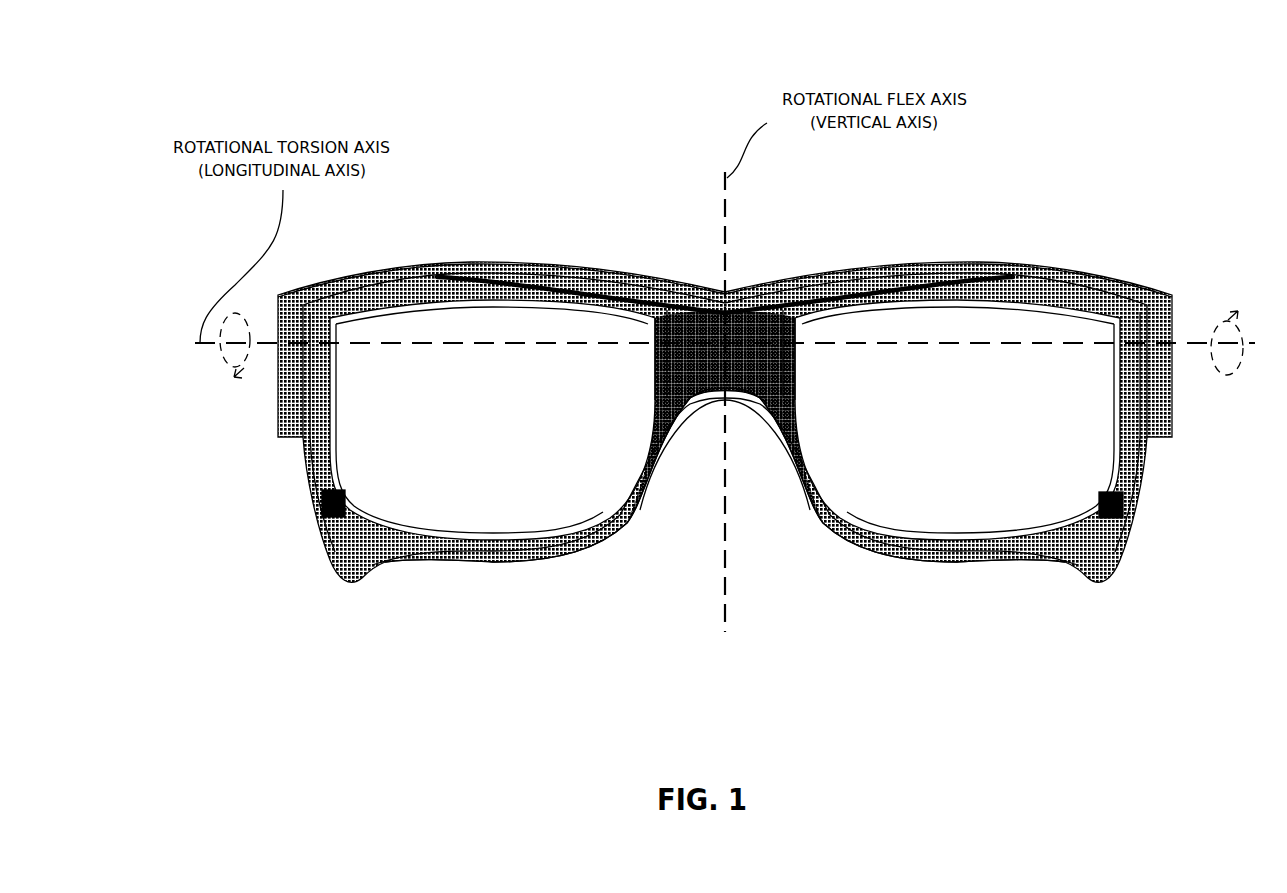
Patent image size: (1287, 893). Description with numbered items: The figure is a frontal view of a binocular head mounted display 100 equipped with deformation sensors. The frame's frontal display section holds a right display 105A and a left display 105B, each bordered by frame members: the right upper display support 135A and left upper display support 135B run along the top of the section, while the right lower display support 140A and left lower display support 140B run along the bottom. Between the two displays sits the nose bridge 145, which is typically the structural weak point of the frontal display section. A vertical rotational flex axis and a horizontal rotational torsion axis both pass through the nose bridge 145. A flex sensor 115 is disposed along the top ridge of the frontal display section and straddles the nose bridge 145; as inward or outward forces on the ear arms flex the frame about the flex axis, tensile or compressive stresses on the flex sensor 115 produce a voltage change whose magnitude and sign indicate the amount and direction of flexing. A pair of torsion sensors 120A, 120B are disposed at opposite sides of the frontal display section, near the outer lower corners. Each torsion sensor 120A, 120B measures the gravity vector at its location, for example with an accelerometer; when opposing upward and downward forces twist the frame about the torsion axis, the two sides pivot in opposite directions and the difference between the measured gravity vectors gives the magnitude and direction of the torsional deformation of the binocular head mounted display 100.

The binocular head mounted display 100 is at (1080, 90).
The right display 105A is at (553, 434).
The left display 105B is at (1050, 434).
The flex sensor 115 is at (745, 318).
The right torsion sensor 120A is at (352, 560).
The left torsion sensor 120B is at (1108, 520).
The right upper display support 135A is at (436, 263).
The left upper display support 135B is at (938, 264).
The right lower display support 140A is at (513, 557).
The left lower display support 140B is at (930, 562).
The nose bridge 145 is at (704, 289).